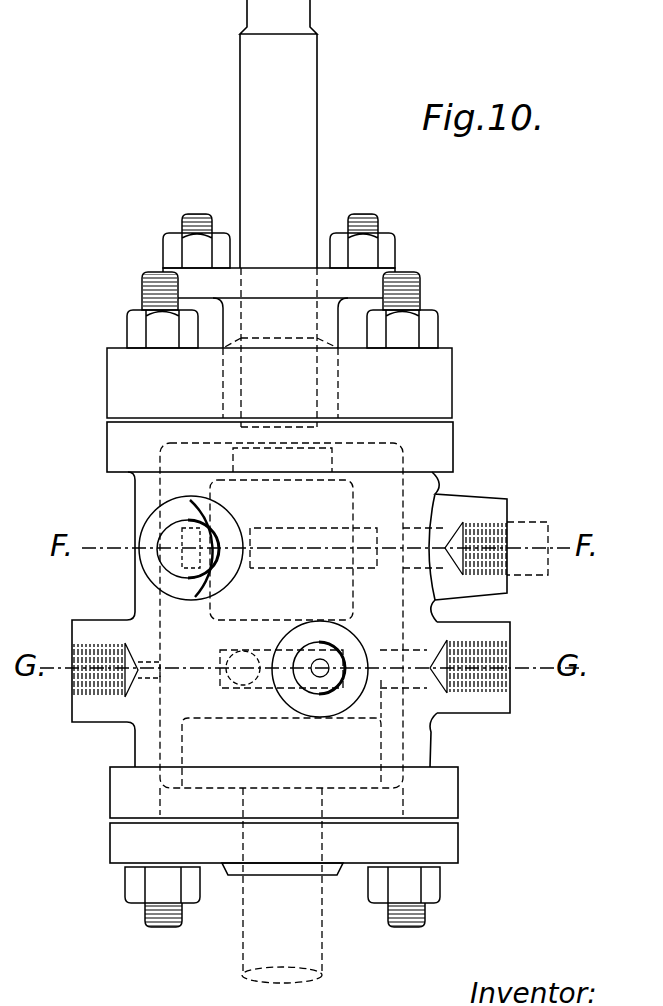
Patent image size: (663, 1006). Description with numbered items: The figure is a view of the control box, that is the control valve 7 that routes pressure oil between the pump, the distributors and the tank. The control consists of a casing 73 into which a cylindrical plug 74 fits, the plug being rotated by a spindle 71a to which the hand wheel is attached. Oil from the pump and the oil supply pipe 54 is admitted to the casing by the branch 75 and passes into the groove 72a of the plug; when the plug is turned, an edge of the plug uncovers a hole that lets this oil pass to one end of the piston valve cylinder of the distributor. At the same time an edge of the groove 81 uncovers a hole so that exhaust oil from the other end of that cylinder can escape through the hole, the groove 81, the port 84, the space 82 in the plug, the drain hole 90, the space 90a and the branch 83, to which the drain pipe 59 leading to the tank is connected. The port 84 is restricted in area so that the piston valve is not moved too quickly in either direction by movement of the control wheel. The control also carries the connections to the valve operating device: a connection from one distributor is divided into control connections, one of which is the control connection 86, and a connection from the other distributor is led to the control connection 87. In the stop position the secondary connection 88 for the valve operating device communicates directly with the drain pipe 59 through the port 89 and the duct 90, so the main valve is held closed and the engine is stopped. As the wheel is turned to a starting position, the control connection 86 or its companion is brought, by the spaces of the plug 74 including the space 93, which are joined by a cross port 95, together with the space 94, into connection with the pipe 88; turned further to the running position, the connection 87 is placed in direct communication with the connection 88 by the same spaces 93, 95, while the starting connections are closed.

The control valve 7 is at (103, 619).
The oil supply pipe 54 is at (537, 576).
The drain pipe 59 is at (310, 957).
The spindle 71a is at (280, 213).
The groove 72a is at (393, 538).
The casing 73 is at (410, 480).
The cylindrical plug 74 is at (177, 697).
The branch 75 is at (493, 513).
The groove 81 is at (185, 560).
The space 82 is at (228, 481).
The branch 83 is at (280, 870).
The port 84 is at (170, 560).
The control connection 86 is at (322, 705).
The control connection 87 is at (72, 690).
The secondary connection 88 is at (510, 687).
The port 89 is at (348, 567).
The drain hole 90 is at (437, 722).
The space 90a is at (367, 747).
The space 93 is at (222, 652).
The space 94 is at (437, 620).
The cross port 95 is at (240, 680).